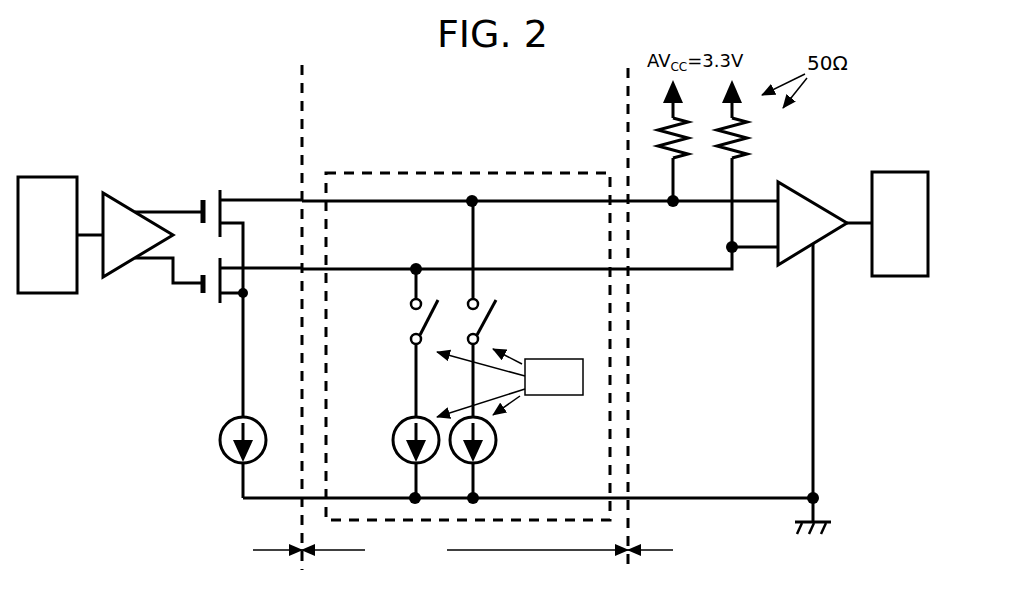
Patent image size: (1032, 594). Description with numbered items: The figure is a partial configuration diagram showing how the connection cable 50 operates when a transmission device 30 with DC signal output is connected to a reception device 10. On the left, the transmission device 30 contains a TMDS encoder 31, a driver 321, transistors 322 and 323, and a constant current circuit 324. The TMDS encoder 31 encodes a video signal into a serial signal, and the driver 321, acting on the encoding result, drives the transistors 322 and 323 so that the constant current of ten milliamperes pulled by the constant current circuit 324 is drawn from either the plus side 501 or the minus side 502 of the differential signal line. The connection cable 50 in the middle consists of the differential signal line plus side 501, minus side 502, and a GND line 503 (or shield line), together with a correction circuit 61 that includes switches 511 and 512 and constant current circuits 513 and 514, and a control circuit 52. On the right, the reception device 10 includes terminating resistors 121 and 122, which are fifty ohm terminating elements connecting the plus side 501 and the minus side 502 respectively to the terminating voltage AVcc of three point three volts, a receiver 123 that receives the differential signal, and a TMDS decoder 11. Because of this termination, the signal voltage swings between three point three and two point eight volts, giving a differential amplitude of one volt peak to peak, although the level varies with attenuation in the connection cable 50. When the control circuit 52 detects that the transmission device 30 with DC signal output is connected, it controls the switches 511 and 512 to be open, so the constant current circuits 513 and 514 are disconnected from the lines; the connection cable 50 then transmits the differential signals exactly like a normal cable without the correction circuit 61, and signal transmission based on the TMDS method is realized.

The TMDS encoder 31 is at (53, 212).
The driver 321 is at (140, 255).
The transistor 322 is at (225, 218).
The transistor 323 is at (232, 306).
The constant current circuit 324 is at (211, 399).
The differential signal line + side 501 is at (540, 220).
The differential signal line − side 502 is at (540, 277).
The GND line 503 is at (531, 475).
The correction circuit 61 is at (468, 324).
The switch 511 is at (519, 272).
The switch 512 is at (386, 307).
The constant current circuit 513 is at (514, 421).
The constant current circuit 514 is at (384, 421).
The control circuit 52 is at (510, 383).
The terminating resistor 121 is at (621, 140).
The terminating resistor 122 is at (772, 163).
The receiver 123 is at (826, 358).
The TMDS decoder 11 is at (900, 200).
The transmission device with DC signal output 30 is at (254, 551).
The connection cable 50 is at (465, 551).
The reception device 10 is at (674, 551).